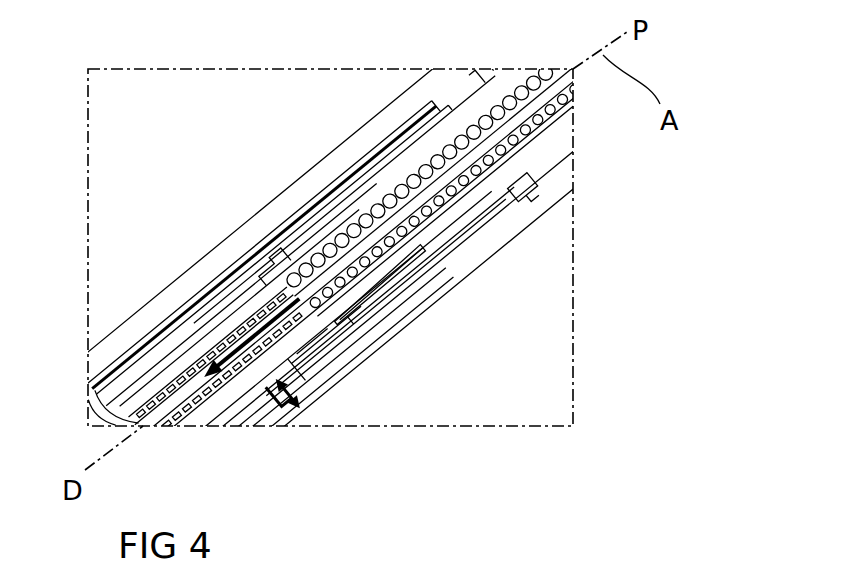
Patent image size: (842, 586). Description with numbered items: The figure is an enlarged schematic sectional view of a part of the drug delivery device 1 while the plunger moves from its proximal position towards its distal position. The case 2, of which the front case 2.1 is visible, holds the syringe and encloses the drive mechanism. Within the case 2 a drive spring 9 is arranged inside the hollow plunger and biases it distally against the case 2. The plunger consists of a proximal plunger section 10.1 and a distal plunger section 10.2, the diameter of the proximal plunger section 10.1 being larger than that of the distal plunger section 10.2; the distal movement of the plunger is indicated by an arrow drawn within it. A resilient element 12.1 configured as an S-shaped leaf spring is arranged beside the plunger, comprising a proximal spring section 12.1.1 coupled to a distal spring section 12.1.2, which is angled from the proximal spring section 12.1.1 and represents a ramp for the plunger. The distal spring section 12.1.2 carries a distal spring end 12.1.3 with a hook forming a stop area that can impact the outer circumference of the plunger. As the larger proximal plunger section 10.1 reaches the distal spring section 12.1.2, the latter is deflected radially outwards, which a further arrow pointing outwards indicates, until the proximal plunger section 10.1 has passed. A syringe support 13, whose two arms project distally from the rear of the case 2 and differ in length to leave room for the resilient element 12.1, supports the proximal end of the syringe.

The drug delivery device 1 is at (157, 98).
The case 2 is at (382, 99).
The front case 2.1 is at (302, 190).
The drive spring 9 is at (468, 186).
The proximal plunger section 10.1 is at (262, 275).
The distal plunger section 10.2 is at (222, 327).
The resilient element 12.1 is at (370, 305).
The proximal spring section 12.1.1 is at (417, 268).
The distal spring section 12.1.2 is at (330, 337).
The distal spring end 12.1.3 is at (266, 383).
The syringe support 13 is at (452, 236).